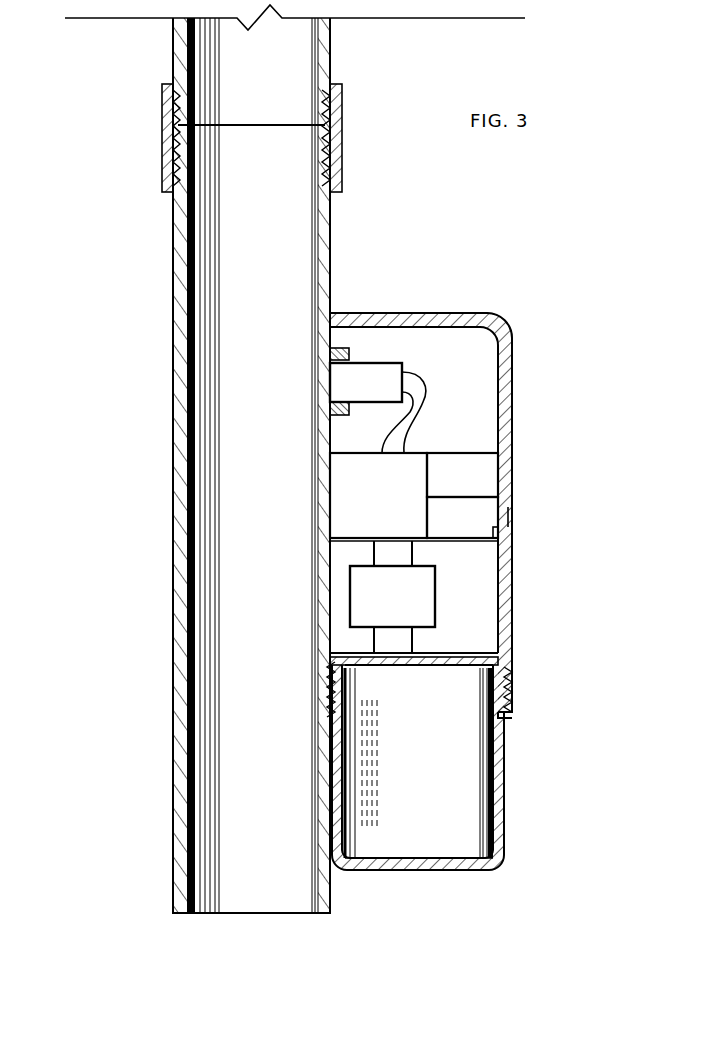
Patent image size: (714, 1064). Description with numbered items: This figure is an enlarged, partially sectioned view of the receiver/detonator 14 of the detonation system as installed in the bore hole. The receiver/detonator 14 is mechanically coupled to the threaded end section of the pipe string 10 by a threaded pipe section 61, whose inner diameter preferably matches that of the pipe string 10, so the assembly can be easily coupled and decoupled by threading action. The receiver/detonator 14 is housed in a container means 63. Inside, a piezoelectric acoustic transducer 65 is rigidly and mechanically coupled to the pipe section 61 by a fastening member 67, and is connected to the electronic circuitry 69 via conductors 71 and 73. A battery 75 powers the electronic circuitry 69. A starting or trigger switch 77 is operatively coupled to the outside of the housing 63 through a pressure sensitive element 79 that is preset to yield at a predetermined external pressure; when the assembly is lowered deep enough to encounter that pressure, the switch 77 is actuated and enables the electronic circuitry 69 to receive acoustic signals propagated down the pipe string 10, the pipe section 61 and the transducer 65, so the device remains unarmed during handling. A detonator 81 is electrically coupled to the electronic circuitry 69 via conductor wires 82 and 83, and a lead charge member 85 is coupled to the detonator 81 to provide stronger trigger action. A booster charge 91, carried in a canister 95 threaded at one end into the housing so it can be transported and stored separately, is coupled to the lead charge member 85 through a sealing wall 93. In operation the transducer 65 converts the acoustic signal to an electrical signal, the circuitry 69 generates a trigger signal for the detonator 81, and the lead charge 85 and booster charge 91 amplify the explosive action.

The pipe string 10 is at (173, 55).
The receiver/detonator 14 is at (512, 388).
The pipe section 61 is at (173, 494).
The container means 63 is at (438, 313).
The acoustic transducer 65 is at (390, 363).
The fastening member 67 is at (343, 348).
The electronic circuitry 69 is at (346, 490).
The conductor 71 is at (412, 441).
The conductor 73 is at (386, 441).
The battery 75 is at (491, 468).
The trigger switch 77 is at (487, 502).
The pressure sensitive element 79 is at (512, 518).
The detonator 81 is at (437, 586).
The conductor wire 82 is at (374, 554).
The conductor wire 83 is at (413, 554).
The lead charge member 85 is at (393, 640).
The booster charge 91 is at (457, 733).
The sealing wall 93 is at (395, 667).
The canister 95 is at (505, 783).